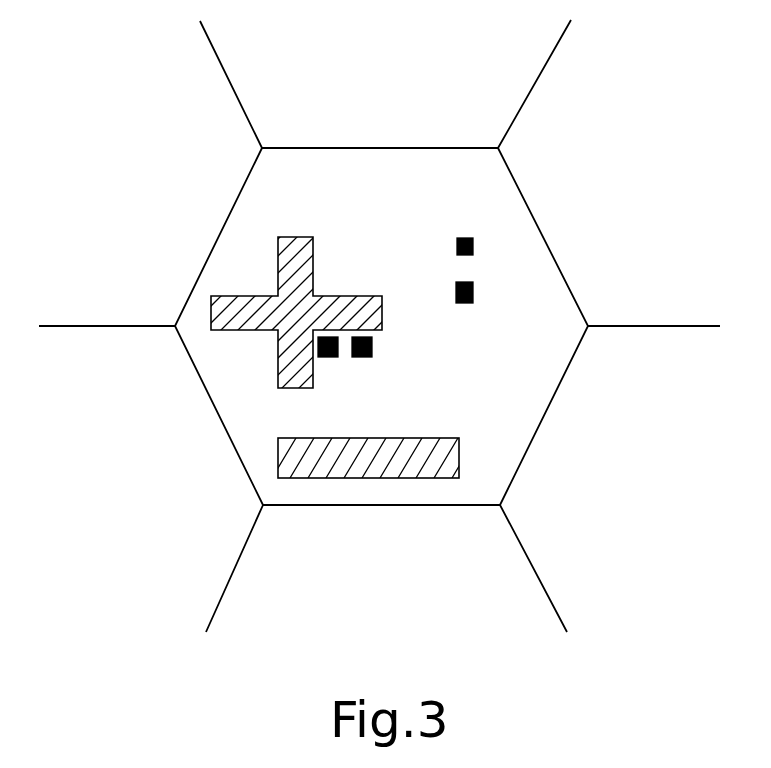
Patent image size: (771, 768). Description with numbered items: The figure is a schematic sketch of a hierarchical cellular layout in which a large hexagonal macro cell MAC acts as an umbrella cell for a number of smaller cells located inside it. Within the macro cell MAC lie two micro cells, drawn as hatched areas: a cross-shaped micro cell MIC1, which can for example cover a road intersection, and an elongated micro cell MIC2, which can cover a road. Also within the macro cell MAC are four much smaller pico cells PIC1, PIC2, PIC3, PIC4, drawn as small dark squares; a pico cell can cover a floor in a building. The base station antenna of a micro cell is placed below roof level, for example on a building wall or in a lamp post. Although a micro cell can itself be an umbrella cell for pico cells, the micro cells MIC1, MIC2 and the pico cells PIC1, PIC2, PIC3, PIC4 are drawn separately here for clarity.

The macro cell MAC is at (543, 418).
The micro cell MIC1 is at (245, 330).
The micro cell MIC2 is at (387, 478).
The pico cell PIC1 is at (457, 247).
The pico cell PIC2 is at (460, 303).
The pico cell PIC3 is at (361, 357).
The pico cell PIC4 is at (325, 357).